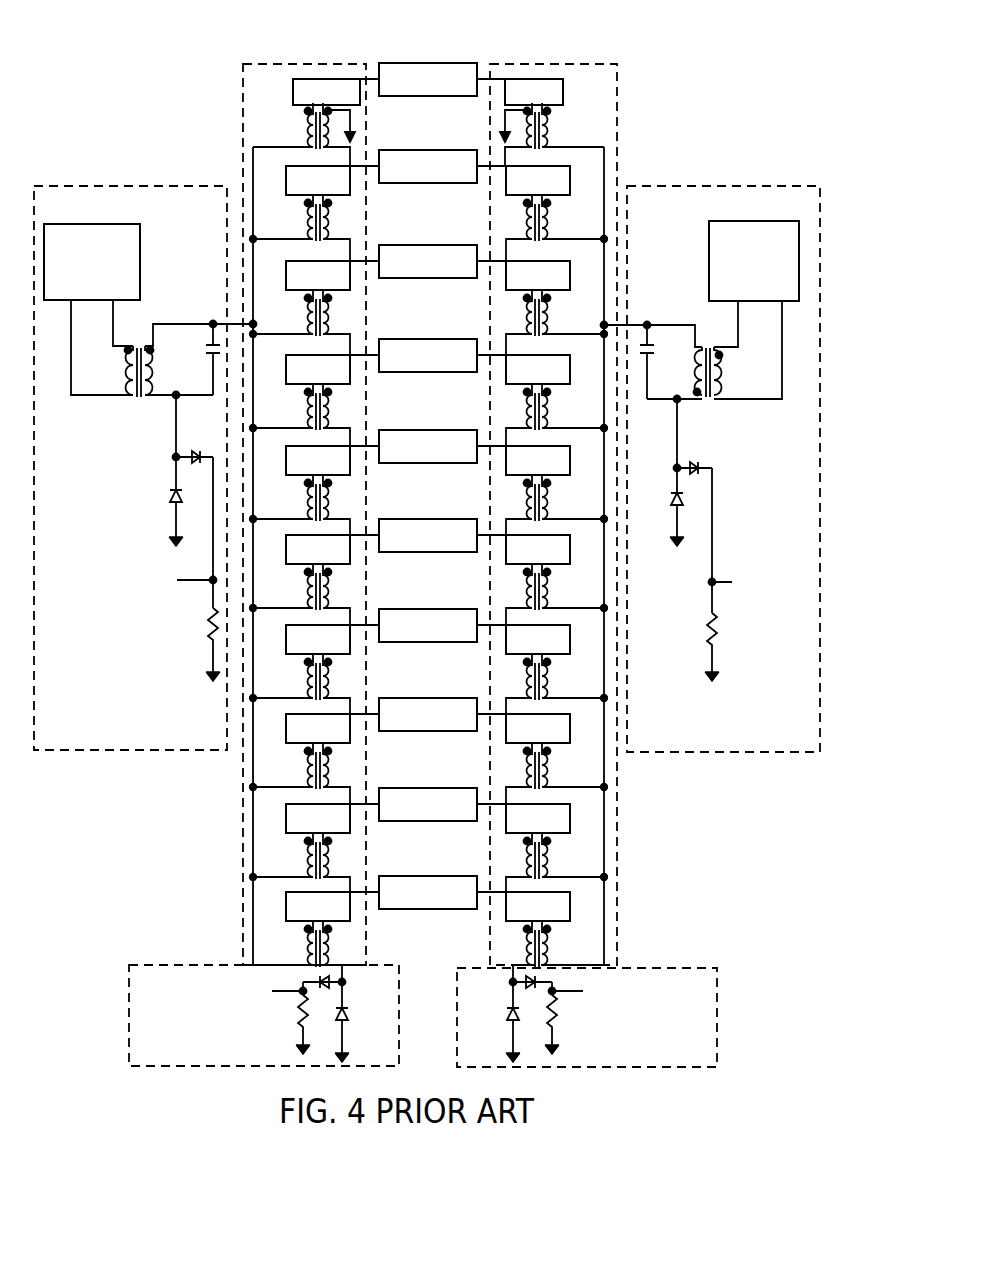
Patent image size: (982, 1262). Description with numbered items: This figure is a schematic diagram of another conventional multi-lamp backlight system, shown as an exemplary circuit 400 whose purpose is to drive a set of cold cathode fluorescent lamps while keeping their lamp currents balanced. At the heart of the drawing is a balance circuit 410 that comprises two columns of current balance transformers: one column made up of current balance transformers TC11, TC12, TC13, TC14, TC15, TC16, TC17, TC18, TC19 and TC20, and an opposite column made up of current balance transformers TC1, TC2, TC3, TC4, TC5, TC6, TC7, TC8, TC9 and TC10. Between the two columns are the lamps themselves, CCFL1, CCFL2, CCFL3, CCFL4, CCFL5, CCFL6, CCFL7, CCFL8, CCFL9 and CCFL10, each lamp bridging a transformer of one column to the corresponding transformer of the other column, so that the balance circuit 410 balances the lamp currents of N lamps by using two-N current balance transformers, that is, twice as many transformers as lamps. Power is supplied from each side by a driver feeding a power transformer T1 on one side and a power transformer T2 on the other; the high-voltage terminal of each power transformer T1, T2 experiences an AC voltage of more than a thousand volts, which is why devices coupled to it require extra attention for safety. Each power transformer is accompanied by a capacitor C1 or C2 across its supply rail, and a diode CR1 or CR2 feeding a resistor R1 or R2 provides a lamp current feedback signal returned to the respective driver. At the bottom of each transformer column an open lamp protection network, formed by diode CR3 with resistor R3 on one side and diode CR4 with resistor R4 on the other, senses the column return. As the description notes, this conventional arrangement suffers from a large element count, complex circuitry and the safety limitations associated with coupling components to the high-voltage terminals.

The exemplary circuit 400 is at (155, 77).
The balance circuit 410 is at (316, 63).
The power transformer T1 is at (139, 354).
The power transformer T2 is at (708, 361).
The capacitor C1 is at (198, 359).
The capacitor C2 is at (659, 362).
The diode CR1 is at (168, 498).
The diode CR2 is at (672, 504).
The diode CR3 is at (364, 1022).
The diode CR4 is at (491, 1022).
The resistor R1 is at (198, 630).
The resistor R2 is at (706, 631).
The resistor R3 is at (291, 1024).
The resistor R4 is at (563, 1024).
The CCFL CCFL1 is at (428, 79).
The CCFL CCFL2 is at (428, 166).
The CCFL CCFL3 is at (428, 261).
The CCFL CCFL4 is at (428, 355).
The CCFL CCFL5 is at (428, 446).
The CCFL CCFL6 is at (428, 535).
The CCFL CCFL7 is at (428, 625).
The CCFL CCFL8 is at (428, 714).
The CCFL CCFL9 is at (428, 804).
The CCFL CCFL10 is at (428, 892).
The current balance transformer TC1 is at (540, 122).
The current balance transformer TC2 is at (540, 213).
The current balance transformer TC3 is at (540, 308).
The current balance transformer TC4 is at (540, 400).
The current balance transformer TC5 is at (540, 490).
The current balance transformer TC6 is at (540, 580).
The current balance transformer TC7 is at (540, 669).
The current balance transformer TC8 is at (540, 759).
The current balance transformer TC9 is at (540, 848).
The current balance transformer TC10 is at (540, 937).
The current balance transformer TC11 is at (316, 122).
The current balance transformer TC12 is at (316, 213).
The current balance transformer TC13 is at (316, 308).
The current balance transformer TC14 is at (316, 400).
The current balance transformer TC15 is at (316, 490).
The current balance transformer TC16 is at (316, 580).
The current balance transformer TC17 is at (316, 669).
The current balance transformer TC18 is at (316, 759).
The current balance transformer TC19 is at (316, 848).
The current balance transformer TC20 is at (316, 937).